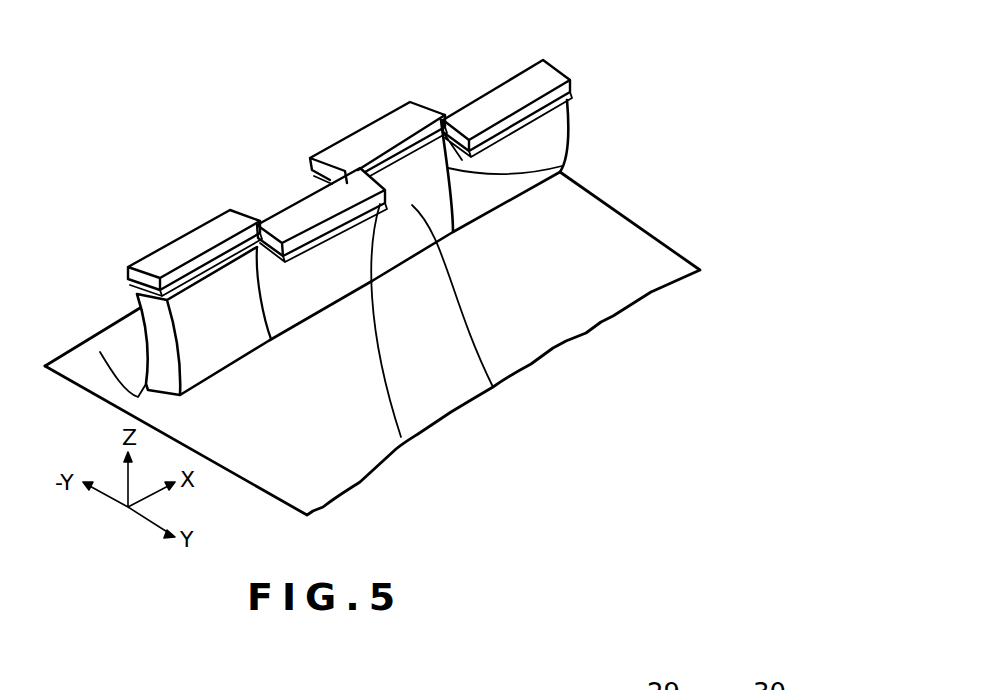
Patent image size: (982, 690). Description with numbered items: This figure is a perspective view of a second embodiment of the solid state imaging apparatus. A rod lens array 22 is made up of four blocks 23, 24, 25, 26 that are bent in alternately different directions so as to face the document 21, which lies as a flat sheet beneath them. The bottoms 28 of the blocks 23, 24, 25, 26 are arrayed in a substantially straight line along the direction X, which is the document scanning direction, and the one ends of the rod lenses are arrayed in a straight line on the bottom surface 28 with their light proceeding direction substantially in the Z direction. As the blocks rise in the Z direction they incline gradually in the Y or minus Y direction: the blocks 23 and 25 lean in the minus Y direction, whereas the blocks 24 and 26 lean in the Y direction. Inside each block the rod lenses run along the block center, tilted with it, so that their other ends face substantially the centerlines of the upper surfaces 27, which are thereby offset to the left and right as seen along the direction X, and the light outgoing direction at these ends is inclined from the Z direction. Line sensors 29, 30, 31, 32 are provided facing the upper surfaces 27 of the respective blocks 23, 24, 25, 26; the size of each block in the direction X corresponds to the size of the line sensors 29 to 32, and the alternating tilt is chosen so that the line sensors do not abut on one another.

The document 21 is at (623, 253).
The rod lens array 22 is at (547, 127).
The block 23 is at (202, 298).
The block 24 is at (280, 270).
The block 25 is at (493, 387).
The block 26 is at (562, 166).
The upper surface 27 is at (213, 268).
The bottom surface 28 is at (100, 352).
The line sensor 29 is at (153, 263).
The line sensor 30 is at (313, 227).
The line sensor 31 is at (358, 148).
The line sensor 32 is at (482, 110).